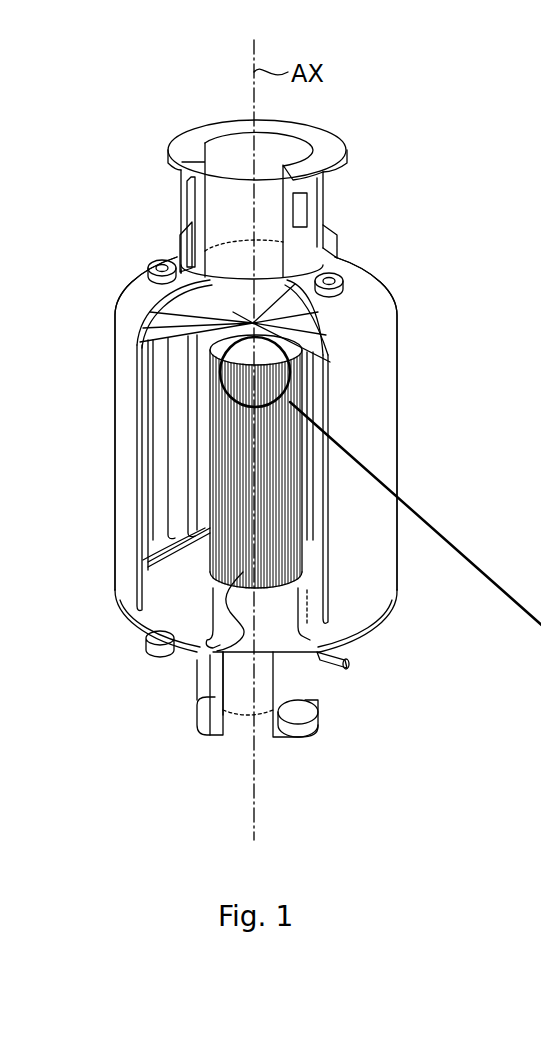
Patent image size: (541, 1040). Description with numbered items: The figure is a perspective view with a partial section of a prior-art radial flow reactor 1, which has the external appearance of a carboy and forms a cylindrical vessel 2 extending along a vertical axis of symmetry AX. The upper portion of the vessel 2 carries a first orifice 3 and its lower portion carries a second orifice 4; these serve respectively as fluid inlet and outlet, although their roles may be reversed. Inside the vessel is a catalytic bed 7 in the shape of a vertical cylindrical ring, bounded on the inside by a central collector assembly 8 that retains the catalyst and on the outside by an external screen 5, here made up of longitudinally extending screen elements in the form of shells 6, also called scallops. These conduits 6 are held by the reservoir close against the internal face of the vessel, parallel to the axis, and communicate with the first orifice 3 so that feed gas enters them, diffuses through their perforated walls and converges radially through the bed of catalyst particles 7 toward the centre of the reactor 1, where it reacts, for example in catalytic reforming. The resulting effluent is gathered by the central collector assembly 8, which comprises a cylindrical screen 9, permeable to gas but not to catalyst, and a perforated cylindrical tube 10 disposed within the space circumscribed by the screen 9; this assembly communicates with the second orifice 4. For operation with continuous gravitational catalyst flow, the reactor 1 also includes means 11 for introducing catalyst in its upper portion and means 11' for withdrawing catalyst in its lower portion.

The radial flow reactor 1 is at (110, 308).
The cylindrical vessel 2 is at (383, 412).
The first orifice 3 is at (237, 155).
The second orifice 4 is at (238, 720).
The external screen 5 is at (162, 500).
The shells 6 is at (187, 442).
The catalytic bed 7 is at (185, 560).
The central collector assembly 8 is at (285, 510).
The cylindrical screen 9 is at (243, 570).
The cylindrical tube 10 is at (285, 608).
The means for introducing catalyst 11 is at (322, 267).
The means for withdrawing catalyst 11' is at (372, 681).